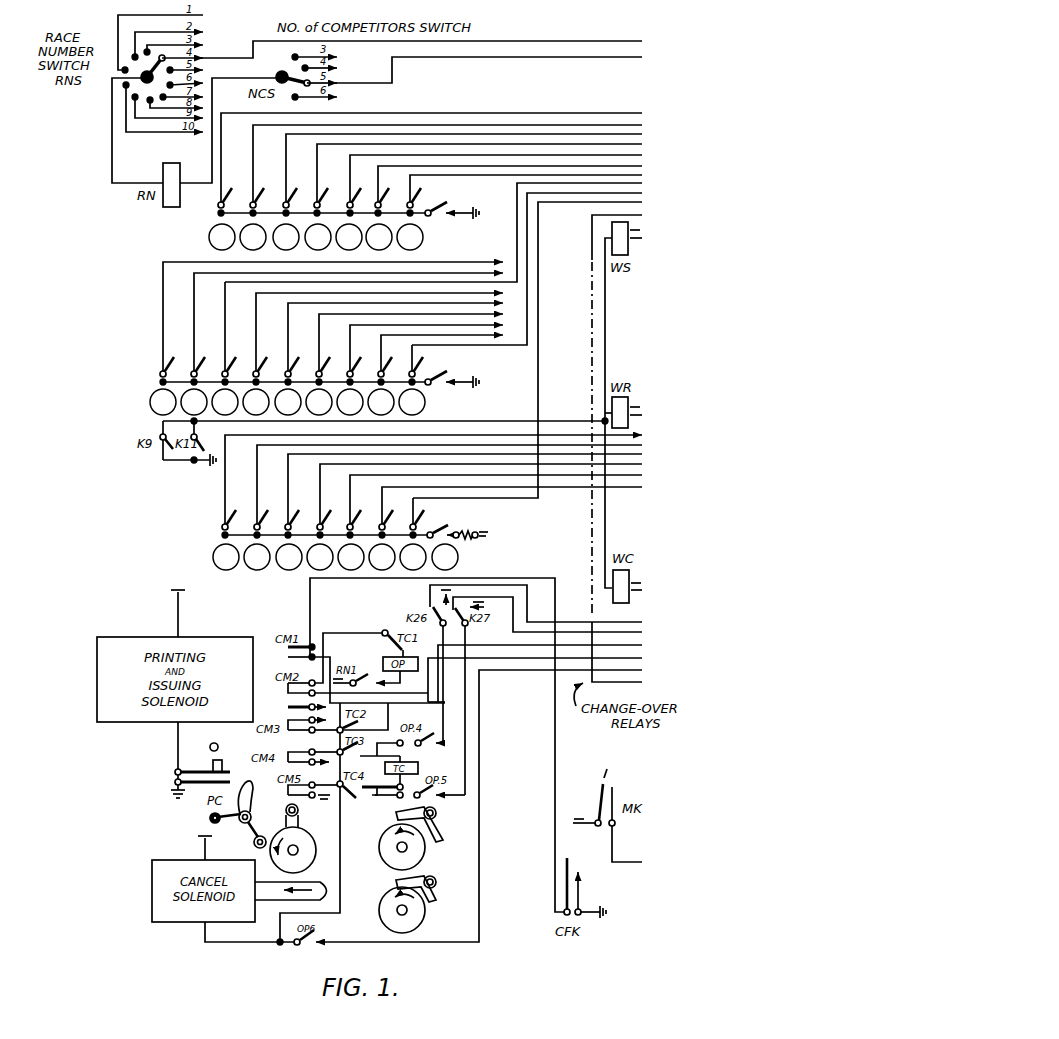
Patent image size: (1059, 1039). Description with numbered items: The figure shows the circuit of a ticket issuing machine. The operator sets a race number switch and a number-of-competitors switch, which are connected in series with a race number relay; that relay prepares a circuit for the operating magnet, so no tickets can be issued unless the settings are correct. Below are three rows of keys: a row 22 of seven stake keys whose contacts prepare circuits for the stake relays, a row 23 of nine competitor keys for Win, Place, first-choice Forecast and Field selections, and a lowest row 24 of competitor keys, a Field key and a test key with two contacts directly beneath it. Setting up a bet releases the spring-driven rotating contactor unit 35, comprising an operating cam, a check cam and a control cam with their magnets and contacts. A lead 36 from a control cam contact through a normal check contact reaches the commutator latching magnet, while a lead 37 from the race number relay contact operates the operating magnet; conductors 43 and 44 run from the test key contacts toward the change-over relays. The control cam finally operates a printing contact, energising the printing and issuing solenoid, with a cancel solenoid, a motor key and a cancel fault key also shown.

The row of stake keys 22 is at (369, 181).
The row of competitor keys 23 is at (265, 339).
The lowest row of keys 24 is at (352, 502).
The rotating contactor unit 35 is at (383, 895).
The lead 36 is at (519, 646).
The lead 37 is at (503, 660).
The conductor 43 is at (584, 614).
The conductor 44 is at (566, 626).